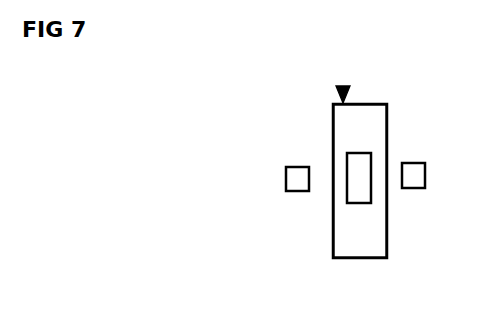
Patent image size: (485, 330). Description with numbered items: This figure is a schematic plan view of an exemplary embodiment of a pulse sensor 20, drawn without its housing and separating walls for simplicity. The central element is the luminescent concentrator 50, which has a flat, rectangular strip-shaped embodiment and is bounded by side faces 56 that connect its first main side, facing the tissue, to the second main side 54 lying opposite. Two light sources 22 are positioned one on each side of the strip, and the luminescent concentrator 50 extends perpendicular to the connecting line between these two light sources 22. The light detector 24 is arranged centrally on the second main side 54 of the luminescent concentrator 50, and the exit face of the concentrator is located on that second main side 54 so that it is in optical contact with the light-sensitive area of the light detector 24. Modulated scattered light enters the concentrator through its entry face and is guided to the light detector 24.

The pulse sensor 20 is at (281, 89).
The light sources 22 is at (293, 166).
The light detector 24 is at (347, 184).
The luminescent concentrator 50 is at (342, 86).
The second main side 54 is at (341, 252).
The side face 56 is at (373, 104).